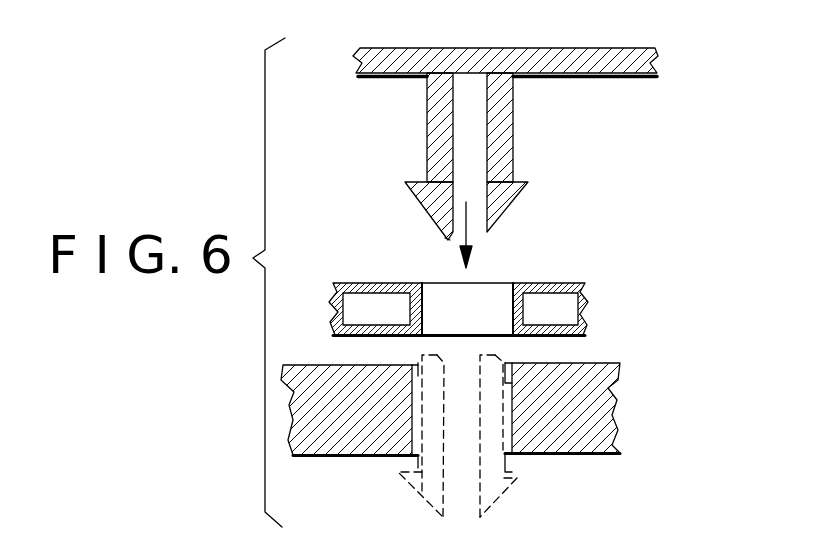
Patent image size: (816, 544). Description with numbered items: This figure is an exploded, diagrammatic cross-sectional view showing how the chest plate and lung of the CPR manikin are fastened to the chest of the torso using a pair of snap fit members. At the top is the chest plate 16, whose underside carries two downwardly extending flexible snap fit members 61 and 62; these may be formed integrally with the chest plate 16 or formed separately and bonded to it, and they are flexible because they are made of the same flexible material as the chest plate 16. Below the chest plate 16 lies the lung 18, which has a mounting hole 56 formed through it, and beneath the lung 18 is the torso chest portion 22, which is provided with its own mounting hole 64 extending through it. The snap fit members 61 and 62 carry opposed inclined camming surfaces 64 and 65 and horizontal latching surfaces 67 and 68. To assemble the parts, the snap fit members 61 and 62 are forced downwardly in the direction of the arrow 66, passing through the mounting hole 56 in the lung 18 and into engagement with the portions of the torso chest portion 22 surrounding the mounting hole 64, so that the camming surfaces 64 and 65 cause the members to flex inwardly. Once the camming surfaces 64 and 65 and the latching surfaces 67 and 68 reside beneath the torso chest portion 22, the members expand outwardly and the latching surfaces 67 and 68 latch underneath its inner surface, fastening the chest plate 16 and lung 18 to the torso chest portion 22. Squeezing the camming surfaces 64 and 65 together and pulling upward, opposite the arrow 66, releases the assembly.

The chest plate 16 is at (613, 79).
The lung 18 is at (572, 283).
The torso chest portion 22 is at (612, 351).
The mounting hole 56 is at (513, 312).
The snap fit member 61 is at (427, 106).
The snap fit member 62 is at (514, 144).
The camming surface 64 is at (413, 193).
The camming surface 65 is at (512, 202).
The arrow 66 is at (446, 240).
The latching surface 67 is at (415, 466).
The latching surface 68 is at (518, 473).